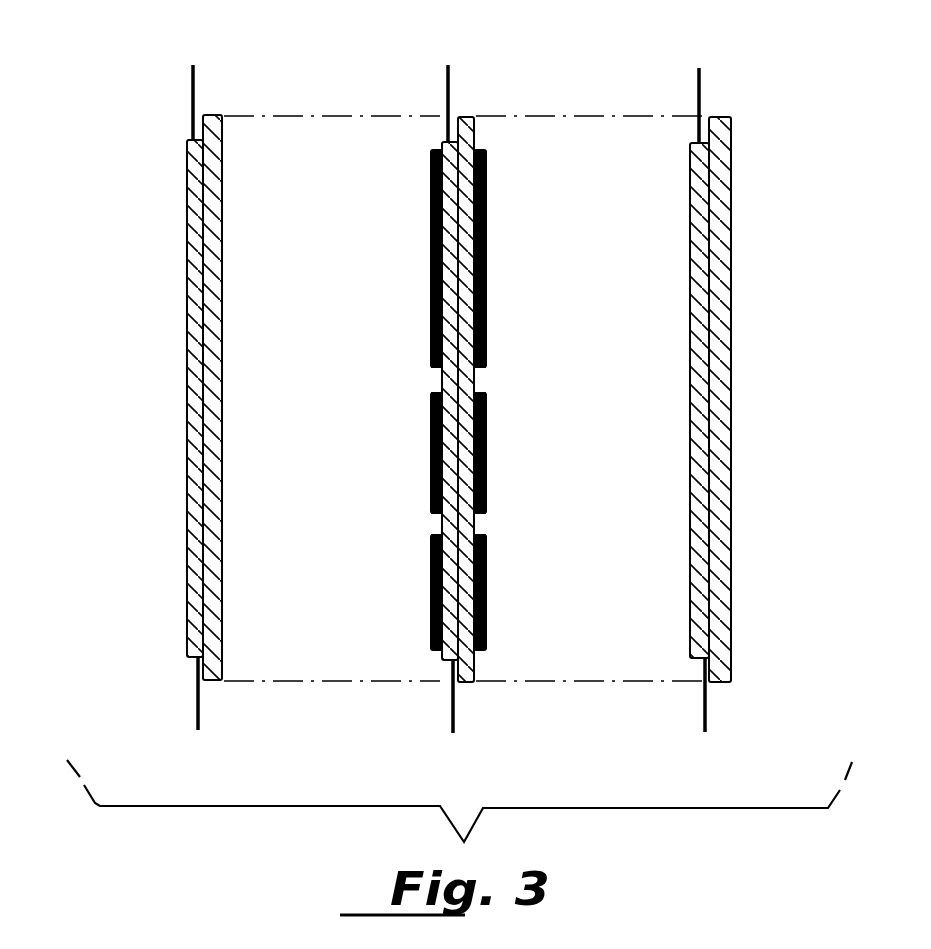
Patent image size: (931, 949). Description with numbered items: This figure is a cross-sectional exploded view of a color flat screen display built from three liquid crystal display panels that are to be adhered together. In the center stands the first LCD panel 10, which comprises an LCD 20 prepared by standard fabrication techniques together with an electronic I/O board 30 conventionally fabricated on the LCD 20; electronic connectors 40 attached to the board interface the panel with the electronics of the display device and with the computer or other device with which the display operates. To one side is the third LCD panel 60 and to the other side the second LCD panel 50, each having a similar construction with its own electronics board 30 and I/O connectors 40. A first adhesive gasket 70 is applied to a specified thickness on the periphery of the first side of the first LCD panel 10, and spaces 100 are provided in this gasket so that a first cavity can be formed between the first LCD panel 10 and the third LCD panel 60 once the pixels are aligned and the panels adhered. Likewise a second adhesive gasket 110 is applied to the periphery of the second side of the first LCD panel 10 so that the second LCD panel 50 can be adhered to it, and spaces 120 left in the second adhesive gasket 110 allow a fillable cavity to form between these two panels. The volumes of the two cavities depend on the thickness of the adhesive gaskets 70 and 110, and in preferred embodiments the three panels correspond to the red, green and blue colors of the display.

The first LCD panel 10 is at (443, 399).
The LCD 20 is at (474, 125).
The electronic I/O board 30 is at (190, 433).
The electronic connectors 40 is at (195, 82).
The second LCD panel 50 is at (681, 305).
The third LCD panel 60 is at (180, 304).
The first adhesive gasket 70 is at (432, 249).
The spaces 100 is at (435, 378).
The second adhesive gasket 110 is at (487, 265).
The spaces 120 is at (488, 380).